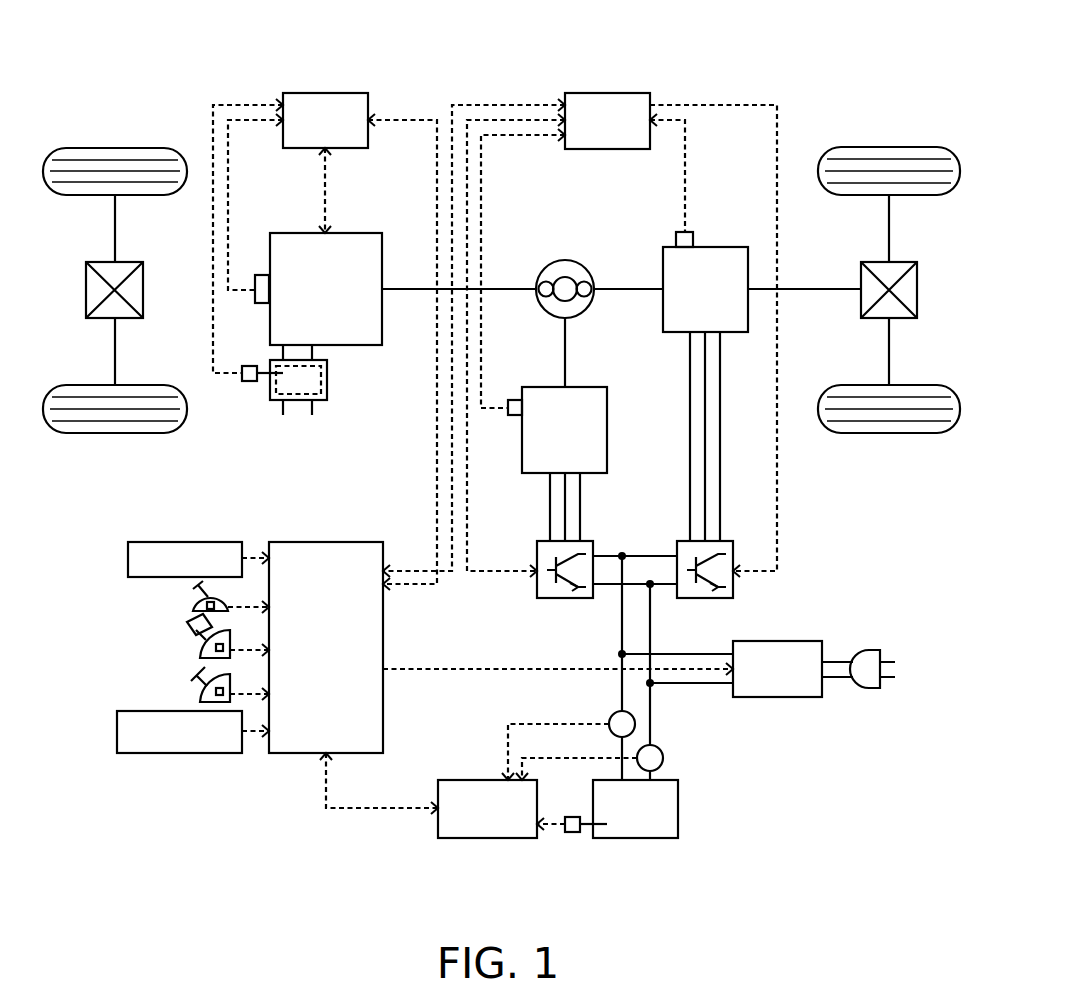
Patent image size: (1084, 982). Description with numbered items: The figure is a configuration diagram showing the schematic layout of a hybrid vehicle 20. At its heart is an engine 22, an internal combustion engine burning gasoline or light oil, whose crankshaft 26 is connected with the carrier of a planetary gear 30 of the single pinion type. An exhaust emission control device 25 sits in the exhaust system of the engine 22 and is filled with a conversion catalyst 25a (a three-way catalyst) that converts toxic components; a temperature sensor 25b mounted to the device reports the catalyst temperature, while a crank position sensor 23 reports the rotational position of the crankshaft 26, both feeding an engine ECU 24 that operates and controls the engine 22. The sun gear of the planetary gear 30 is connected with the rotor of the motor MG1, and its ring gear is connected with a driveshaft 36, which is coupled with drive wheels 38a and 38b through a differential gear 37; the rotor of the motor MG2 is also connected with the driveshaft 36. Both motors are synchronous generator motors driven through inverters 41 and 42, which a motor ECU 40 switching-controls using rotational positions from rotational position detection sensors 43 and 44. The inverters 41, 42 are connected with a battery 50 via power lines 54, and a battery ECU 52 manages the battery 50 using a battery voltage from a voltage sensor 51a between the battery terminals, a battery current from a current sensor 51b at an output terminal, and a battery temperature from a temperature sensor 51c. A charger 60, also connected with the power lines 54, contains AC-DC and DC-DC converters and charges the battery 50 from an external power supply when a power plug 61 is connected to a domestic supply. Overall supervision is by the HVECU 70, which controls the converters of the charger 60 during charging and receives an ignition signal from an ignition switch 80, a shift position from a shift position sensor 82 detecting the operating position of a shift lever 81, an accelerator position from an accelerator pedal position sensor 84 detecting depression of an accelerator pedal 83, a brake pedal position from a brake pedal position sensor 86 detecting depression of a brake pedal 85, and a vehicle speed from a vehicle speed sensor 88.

The hybrid vehicle 20 is at (746, 66).
The engine 22 is at (352, 233).
The crank position sensor 23 is at (260, 275).
The engine ECU 24 is at (322, 93).
The exhaust emission control device 25 is at (327, 376).
The conversion catalyst 25a is at (321, 390).
The temperature sensor 25b is at (249, 384).
The crankshaft 26 is at (392, 289).
The planetary gear 30 is at (563, 260).
The driveshaft 36 is at (821, 289).
The differential gear 37 is at (897, 262).
The drive wheel 38a is at (888, 147).
The drive wheel 38b is at (887, 433).
The motor ECU 40 is at (617, 93).
The inverter 41 is at (588, 541).
The inverter 42 is at (728, 541).
The rotational position detection sensor 43 is at (514, 400).
The rotational position detection sensor 44 is at (676, 240).
The motor MG1 is at (590, 387).
The motor MG2 is at (713, 247).
The battery 50 is at (678, 810).
The voltage sensor 51a is at (663, 760).
The current sensor 51b is at (636, 727).
The temperature sensor 51c is at (569, 832).
The battery ECU 52 is at (481, 780).
The power lines 54 is at (642, 585).
The charger 60 is at (772, 641).
The power plug 61 is at (866, 650).
The HVECU 70 is at (337, 542).
The ignition switch 80 is at (128, 558).
The shift lever 81 is at (198, 590).
The shift position sensor 82 is at (208, 604).
The accelerator pedal 83 is at (192, 632).
The accelerator pedal position sensor 84 is at (220, 650).
The brake pedal 85 is at (196, 682).
The brake pedal position sensor 86 is at (220, 696).
The vehicle speed sensor 88 is at (117, 735).